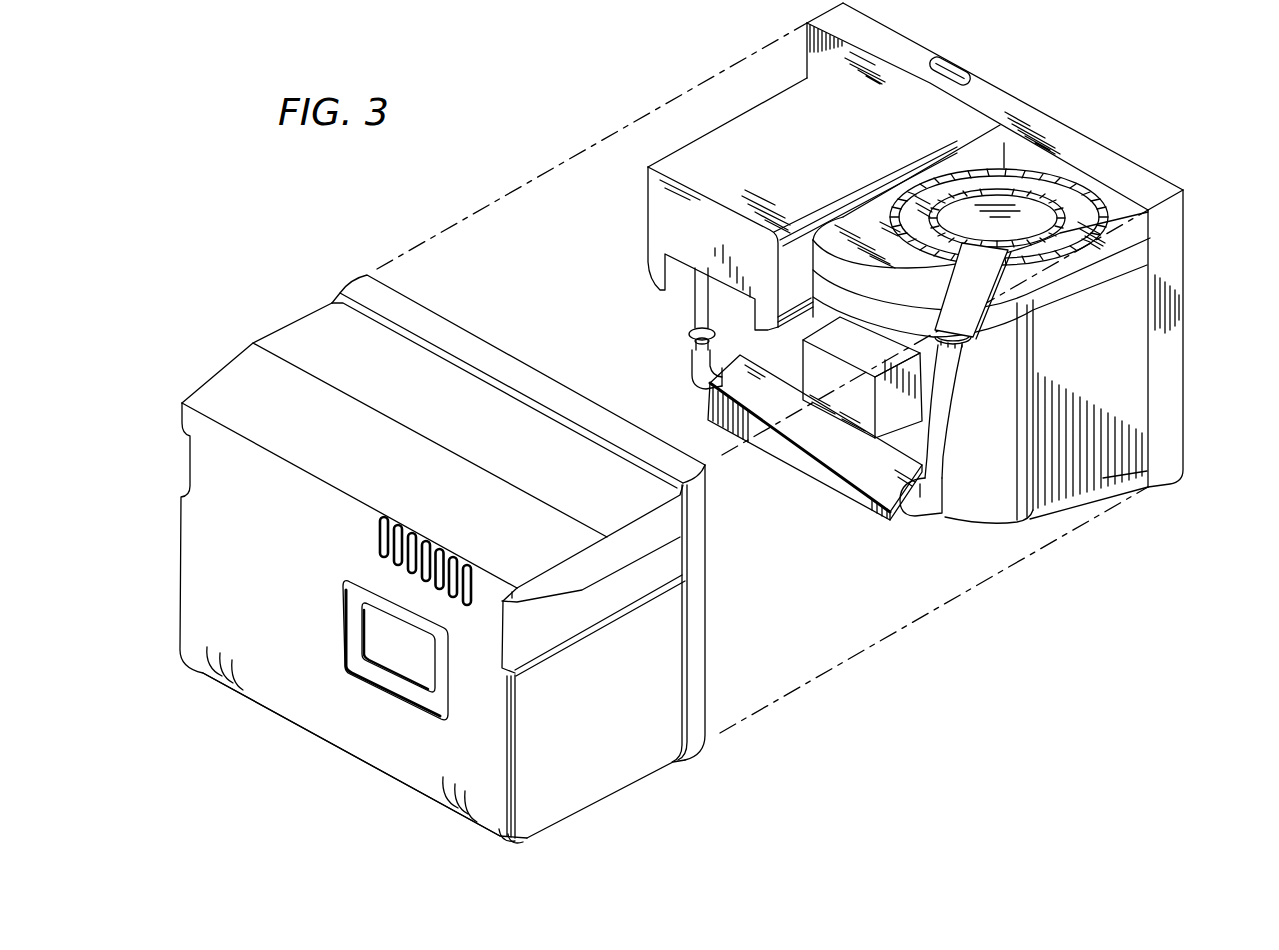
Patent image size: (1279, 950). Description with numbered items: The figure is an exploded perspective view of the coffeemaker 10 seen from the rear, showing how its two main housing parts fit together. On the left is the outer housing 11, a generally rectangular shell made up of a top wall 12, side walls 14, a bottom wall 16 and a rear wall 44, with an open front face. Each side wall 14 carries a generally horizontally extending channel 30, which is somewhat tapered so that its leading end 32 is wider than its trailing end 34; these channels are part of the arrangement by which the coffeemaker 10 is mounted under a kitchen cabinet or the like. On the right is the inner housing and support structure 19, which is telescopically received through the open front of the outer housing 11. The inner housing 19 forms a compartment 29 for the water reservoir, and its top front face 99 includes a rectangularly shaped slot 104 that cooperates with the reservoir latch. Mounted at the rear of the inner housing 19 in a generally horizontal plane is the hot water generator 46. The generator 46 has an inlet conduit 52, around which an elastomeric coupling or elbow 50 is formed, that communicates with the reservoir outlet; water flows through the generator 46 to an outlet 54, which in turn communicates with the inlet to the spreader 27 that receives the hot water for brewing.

The coffeemaker 10 is at (1055, 98).
The outer housing 11 is at (218, 352).
The top wall 12 is at (487, 521).
The side walls 14 is at (607, 763).
The bottom wall 16 is at (567, 826).
The inner housing and support structure 19 is at (1190, 326).
The spreader 27 is at (1023, 223).
The compartment 29 is at (775, 135).
The channel 30 is at (522, 657).
The leading end 32 is at (511, 605).
The trailing end 34 is at (645, 593).
The rear wall 44 is at (308, 693).
The hot water generator 46 is at (827, 490).
The elastomeric coupling or elbow 50 is at (697, 367).
The inlet conduit 52 is at (697, 312).
The outlet 54 is at (937, 432).
The top front face 99 is at (1085, 151).
The slot 104 is at (958, 62).